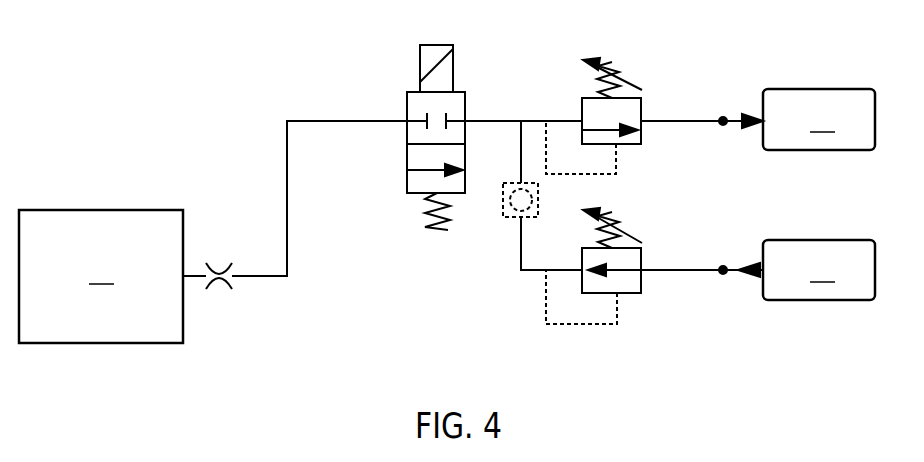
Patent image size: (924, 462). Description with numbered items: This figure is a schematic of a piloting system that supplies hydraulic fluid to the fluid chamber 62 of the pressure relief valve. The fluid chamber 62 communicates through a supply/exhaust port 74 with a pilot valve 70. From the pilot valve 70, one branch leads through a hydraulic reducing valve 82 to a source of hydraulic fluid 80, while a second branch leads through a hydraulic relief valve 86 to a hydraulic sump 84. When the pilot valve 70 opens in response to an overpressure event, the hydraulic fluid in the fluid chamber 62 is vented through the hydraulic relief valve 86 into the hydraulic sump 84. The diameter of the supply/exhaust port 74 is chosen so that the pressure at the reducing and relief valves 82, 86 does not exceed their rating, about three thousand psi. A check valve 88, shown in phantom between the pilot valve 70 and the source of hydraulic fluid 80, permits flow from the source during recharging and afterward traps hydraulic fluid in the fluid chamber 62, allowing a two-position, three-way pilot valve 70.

The fluid chamber 62 is at (101, 276).
The supply/exhaust port 74 is at (226, 296).
The pilot valve 70 is at (401, 209).
The check valve 88 is at (506, 224).
The hydraulic relief valve 86 is at (658, 83).
The hydraulic reducing valve 82 is at (637, 306).
The hydraulic sump 84 is at (819, 119).
The source of hydraulic fluid 80 is at (819, 270).